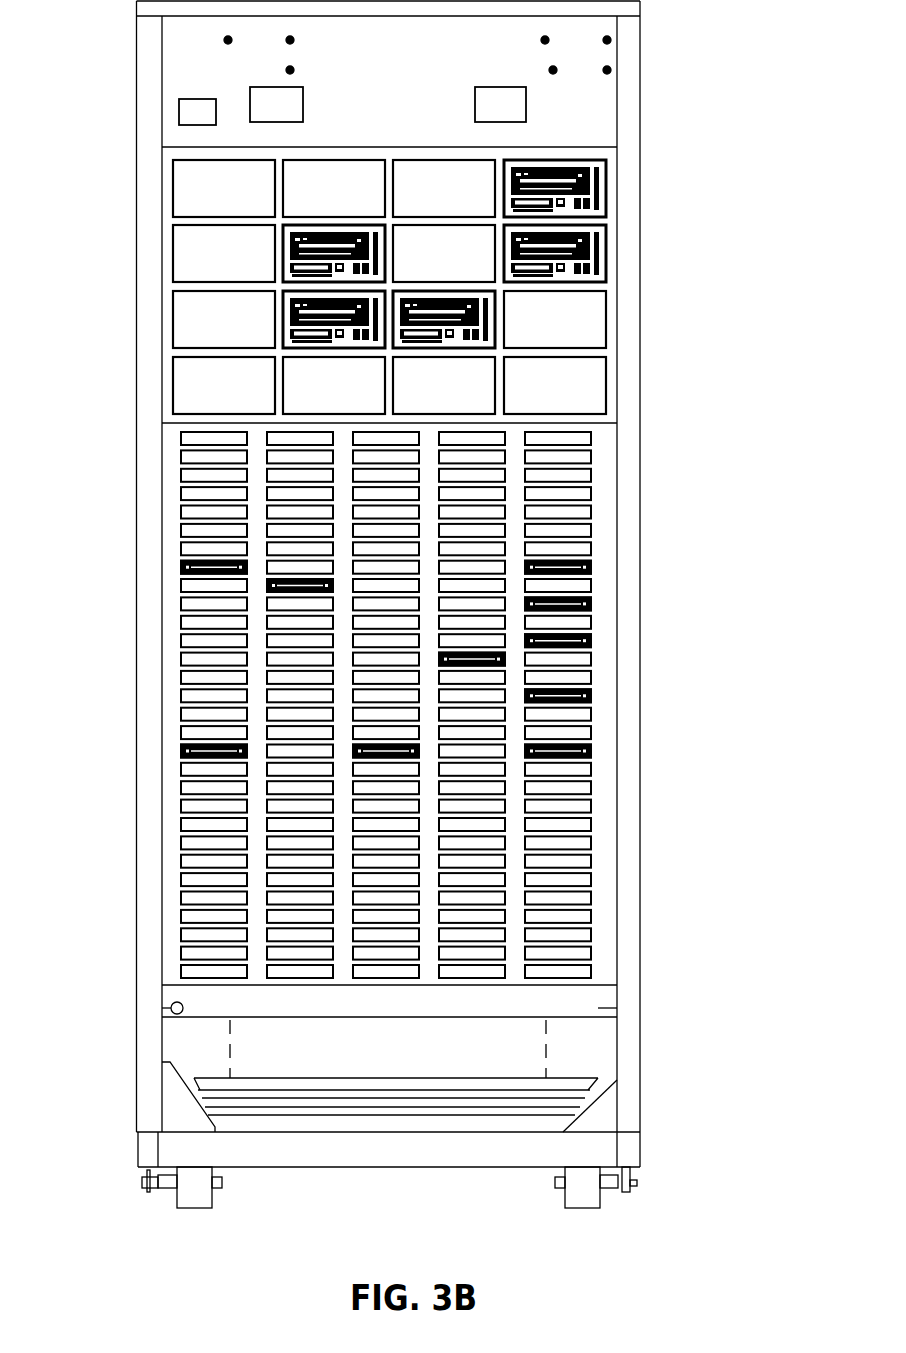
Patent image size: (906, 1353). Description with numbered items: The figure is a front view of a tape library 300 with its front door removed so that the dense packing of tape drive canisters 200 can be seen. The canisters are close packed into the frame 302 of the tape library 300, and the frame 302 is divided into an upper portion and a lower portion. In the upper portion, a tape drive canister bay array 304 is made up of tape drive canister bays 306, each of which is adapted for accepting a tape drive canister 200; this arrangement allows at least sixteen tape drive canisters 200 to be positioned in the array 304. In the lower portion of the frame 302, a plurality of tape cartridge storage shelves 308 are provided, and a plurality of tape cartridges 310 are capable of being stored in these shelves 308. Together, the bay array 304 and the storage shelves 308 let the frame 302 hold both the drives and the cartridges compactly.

The tape library 300 is at (722, 345).
The frame 302 is at (167, 153).
The tape drive canister bay array 304 is at (129, 156).
The tape drive canister bay 306 is at (245, 200).
The tape drive canister 200 is at (597, 253).
The tape cartridge storage shelf 308 is at (129, 433).
The tape cartridge 310 is at (590, 640).